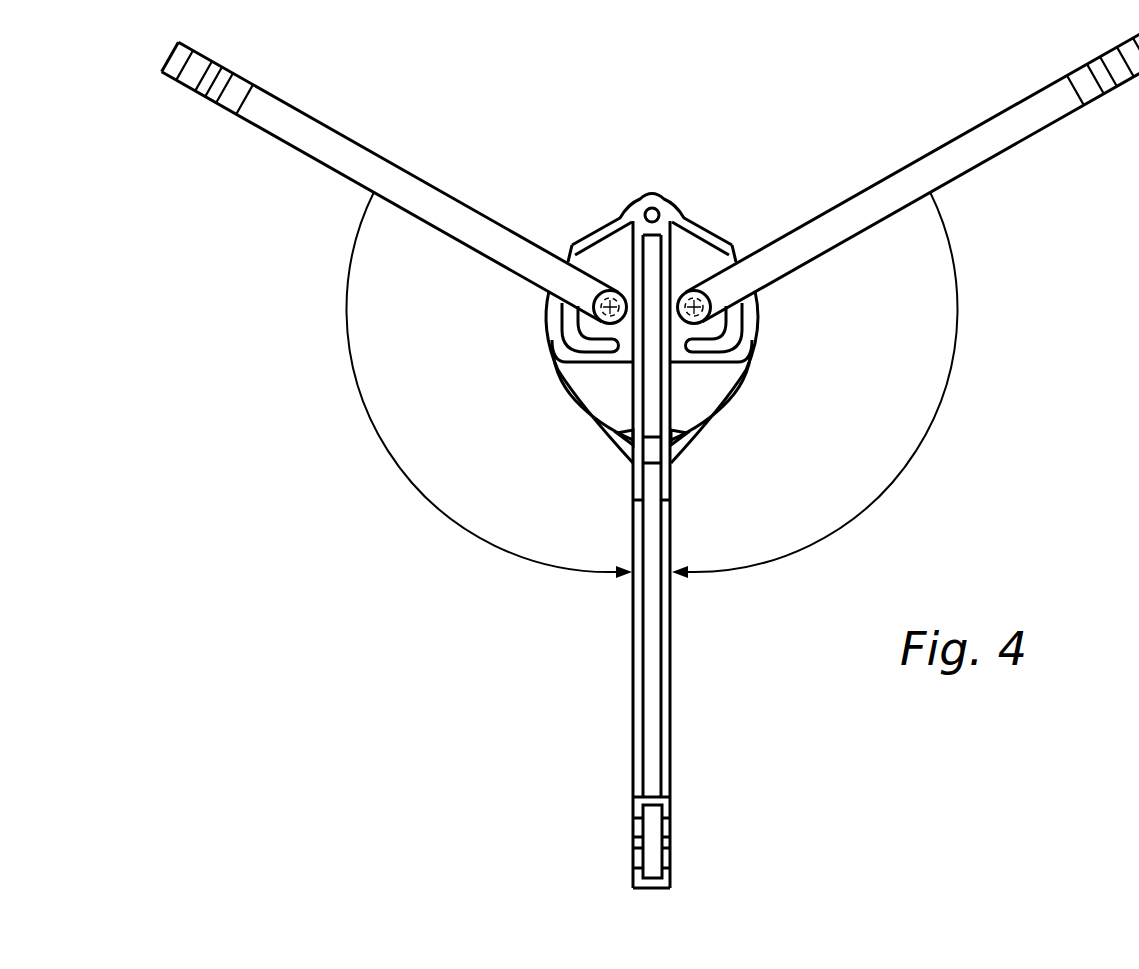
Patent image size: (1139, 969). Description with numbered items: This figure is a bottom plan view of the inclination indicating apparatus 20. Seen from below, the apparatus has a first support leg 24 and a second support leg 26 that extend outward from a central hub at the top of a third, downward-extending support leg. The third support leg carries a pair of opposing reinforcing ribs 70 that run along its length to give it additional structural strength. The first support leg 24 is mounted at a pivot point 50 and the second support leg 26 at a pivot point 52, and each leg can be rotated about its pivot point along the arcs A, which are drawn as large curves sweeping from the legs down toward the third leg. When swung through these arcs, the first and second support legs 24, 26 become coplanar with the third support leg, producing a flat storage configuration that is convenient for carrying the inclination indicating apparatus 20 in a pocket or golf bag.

The inclination indicating apparatus 20 is at (442, 598).
The first support leg 24 is at (272, 105).
The second support leg 26 is at (1012, 127).
The pivot point 50 is at (608, 300).
The pivot point 52 is at (698, 300).
The reinforcing ribs 70 is at (664, 770).
The arcs A is at (398, 469).